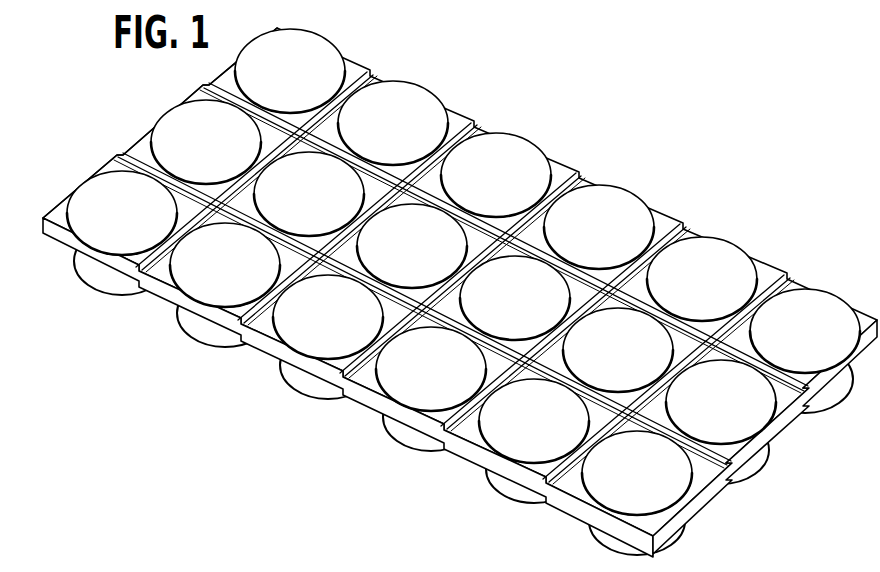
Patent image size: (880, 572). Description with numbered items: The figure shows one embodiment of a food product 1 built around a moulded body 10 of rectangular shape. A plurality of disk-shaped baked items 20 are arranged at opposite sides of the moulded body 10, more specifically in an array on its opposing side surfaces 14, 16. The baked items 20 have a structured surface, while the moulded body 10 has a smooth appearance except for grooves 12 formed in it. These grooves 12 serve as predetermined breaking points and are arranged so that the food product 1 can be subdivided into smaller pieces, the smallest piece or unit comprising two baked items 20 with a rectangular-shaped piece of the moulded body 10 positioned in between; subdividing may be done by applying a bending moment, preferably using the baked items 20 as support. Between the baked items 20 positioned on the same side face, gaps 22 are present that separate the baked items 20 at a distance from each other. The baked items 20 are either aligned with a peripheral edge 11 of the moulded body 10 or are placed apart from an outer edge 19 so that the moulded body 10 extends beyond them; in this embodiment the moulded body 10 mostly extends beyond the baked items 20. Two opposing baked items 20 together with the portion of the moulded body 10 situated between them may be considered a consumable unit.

The food product 1 is at (703, 130).
The moulded body 10 is at (345, 66).
The peripheral edge 11 is at (713, 490).
The grooves 12 is at (140, 287).
The side surface 14 is at (60, 210).
The side surface 16 is at (355, 406).
The outer edge 19 is at (563, 504).
The baked items 20 is at (512, 146).
The gaps 22 is at (830, 266).